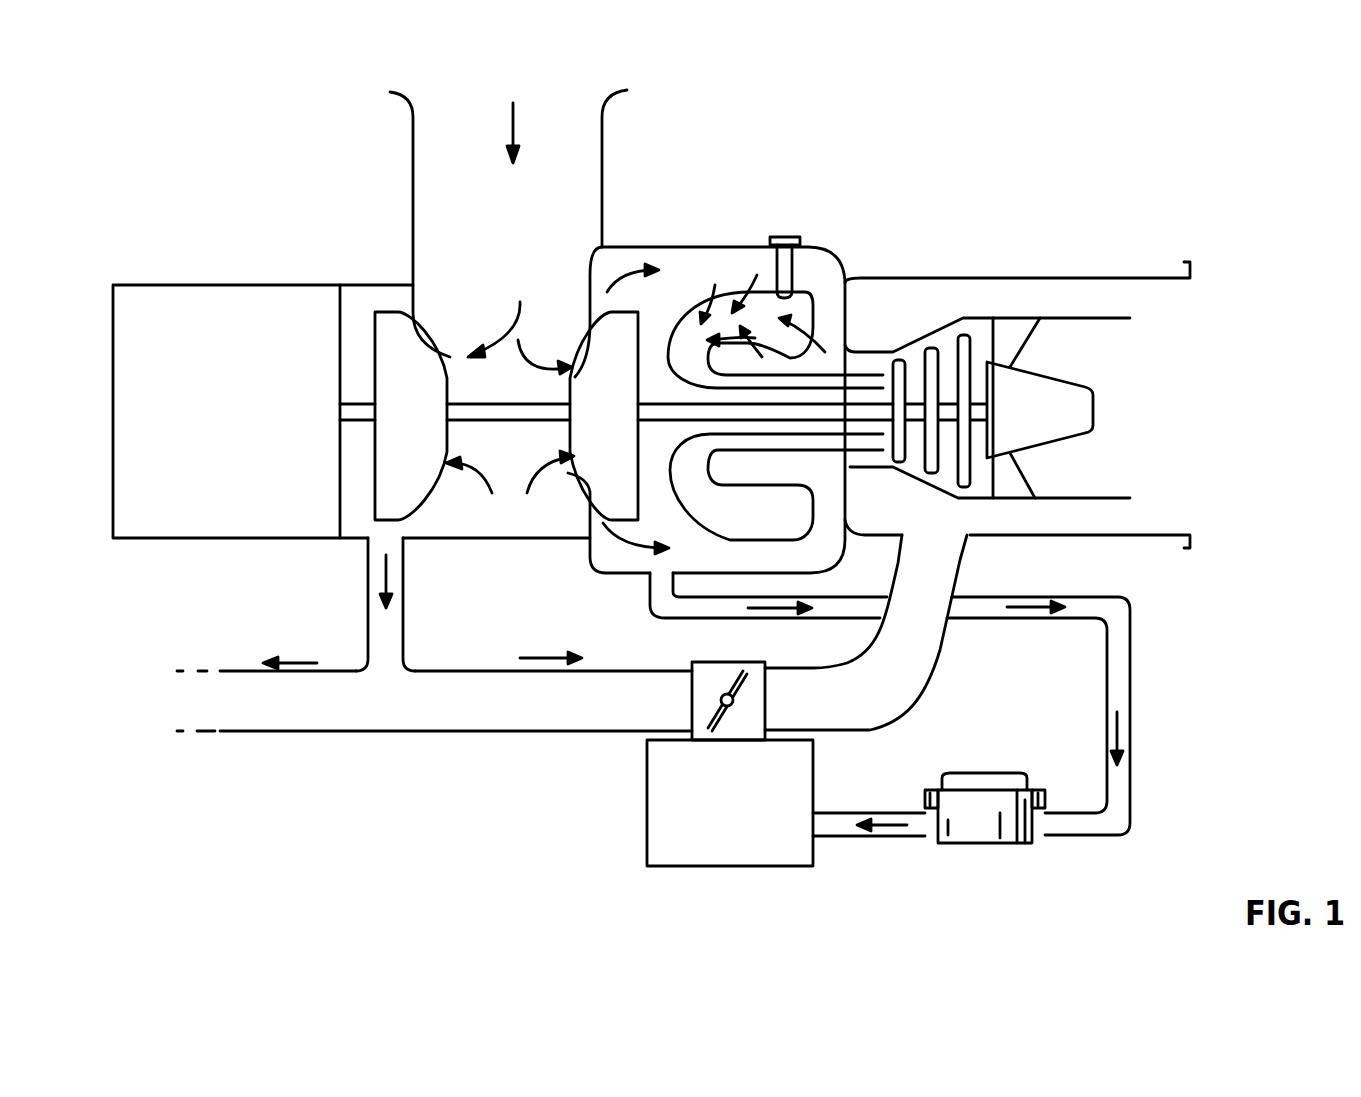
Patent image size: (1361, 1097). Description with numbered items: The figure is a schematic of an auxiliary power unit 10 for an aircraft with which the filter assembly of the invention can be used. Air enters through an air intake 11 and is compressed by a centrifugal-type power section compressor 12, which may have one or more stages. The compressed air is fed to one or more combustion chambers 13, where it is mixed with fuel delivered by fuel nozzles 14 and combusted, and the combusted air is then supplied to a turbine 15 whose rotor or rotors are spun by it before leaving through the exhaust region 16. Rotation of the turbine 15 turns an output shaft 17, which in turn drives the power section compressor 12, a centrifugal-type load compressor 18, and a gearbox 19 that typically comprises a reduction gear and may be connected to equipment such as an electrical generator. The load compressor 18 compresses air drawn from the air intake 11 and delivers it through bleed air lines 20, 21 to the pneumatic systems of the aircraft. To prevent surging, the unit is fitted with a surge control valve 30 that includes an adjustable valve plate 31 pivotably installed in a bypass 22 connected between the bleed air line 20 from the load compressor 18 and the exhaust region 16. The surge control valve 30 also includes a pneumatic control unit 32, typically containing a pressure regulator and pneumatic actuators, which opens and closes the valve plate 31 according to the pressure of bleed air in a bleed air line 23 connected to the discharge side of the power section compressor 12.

The auxiliary power unit 10 is at (925, 190).
The air intake 11 is at (603, 185).
The power section compressor 12 is at (598, 487).
The combustion chambers 13 is at (688, 262).
The fuel nozzles 14 is at (785, 235).
The turbine 15 is at (912, 350).
The exhaust region 16 is at (1093, 340).
The output shaft 17 is at (520, 423).
The load compressor 18 is at (348, 501).
The gearbox 19 is at (226, 411).
The bleed air line 20 is at (407, 615).
The bleed air line 21 is at (318, 732).
The bypass 22 is at (937, 670).
The bleed air line 23 is at (1130, 645).
The surge control valve 30 is at (787, 791).
The valve plate 31 is at (767, 705).
The pneumatic control unit 32 is at (713, 866).